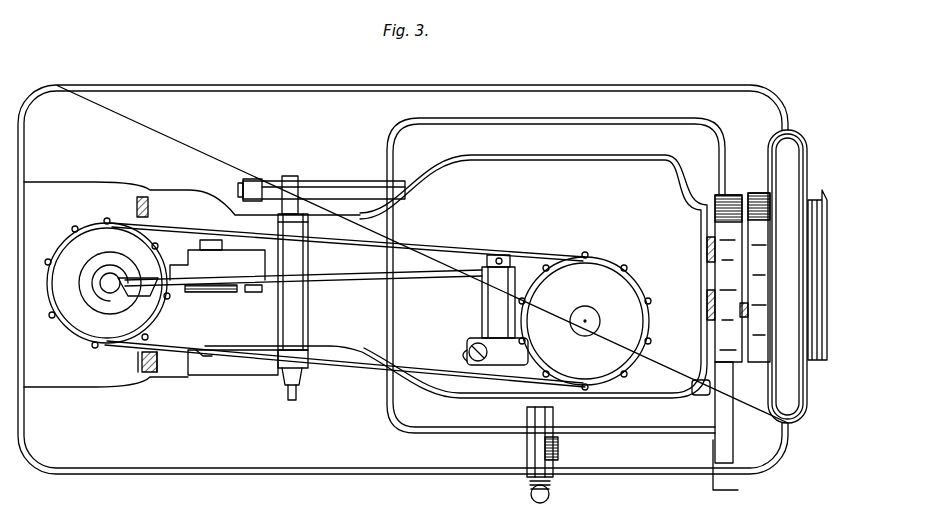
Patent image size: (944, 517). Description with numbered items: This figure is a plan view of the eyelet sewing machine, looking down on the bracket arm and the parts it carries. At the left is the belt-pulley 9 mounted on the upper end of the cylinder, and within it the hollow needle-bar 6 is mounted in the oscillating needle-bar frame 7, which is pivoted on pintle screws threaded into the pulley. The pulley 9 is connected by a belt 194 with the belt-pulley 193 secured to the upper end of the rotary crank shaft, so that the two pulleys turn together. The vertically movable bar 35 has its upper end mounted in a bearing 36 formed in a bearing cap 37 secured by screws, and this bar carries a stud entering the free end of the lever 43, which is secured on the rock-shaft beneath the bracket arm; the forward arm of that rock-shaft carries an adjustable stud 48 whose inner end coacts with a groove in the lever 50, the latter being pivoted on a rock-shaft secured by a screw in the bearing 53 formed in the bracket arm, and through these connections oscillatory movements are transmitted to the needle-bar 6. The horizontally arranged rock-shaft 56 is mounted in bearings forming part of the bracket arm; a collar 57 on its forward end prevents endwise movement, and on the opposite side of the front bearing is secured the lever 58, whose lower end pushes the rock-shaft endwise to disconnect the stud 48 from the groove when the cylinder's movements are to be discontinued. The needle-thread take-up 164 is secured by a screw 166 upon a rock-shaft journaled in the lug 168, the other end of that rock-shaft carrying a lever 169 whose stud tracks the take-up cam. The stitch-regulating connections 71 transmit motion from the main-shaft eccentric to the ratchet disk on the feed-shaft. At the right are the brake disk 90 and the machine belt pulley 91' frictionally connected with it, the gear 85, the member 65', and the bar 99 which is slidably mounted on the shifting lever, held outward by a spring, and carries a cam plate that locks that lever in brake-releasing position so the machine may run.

The needle-bar frame 7 is at (296, 88).
The belt-pulley 9 is at (107, 283).
The hollow needle-bar 6 is at (110, 283).
The belt 194 is at (420, 243).
The horizontally arranged rock-shaft 56 is at (396, 190).
The collar 57 is at (251, 178).
The lever 58 is at (300, 190).
The bearing 53 is at (310, 328).
The lever 50 is at (308, 360).
The stud 48 is at (298, 398).
The lever 43 is at (238, 376).
The bearing 36 is at (152, 373).
The bearing cap 37 is at (140, 362).
The vertically movable bar 35 is at (158, 362).
The needle-thread take-up 164 is at (356, 280).
The lug 168 is at (482, 300).
The screw 166 is at (500, 257).
The lever 169 is at (505, 366).
The belt-pulley 193 is at (650, 322).
The gear 85 is at (728, 196).
The brake disk 90 is at (760, 364).
The machine belt pulley 91' is at (797, 264).
The bracket 65' is at (740, 412).
The bar 99 is at (718, 492).
The stitch-regulating connections 71 is at (552, 484).